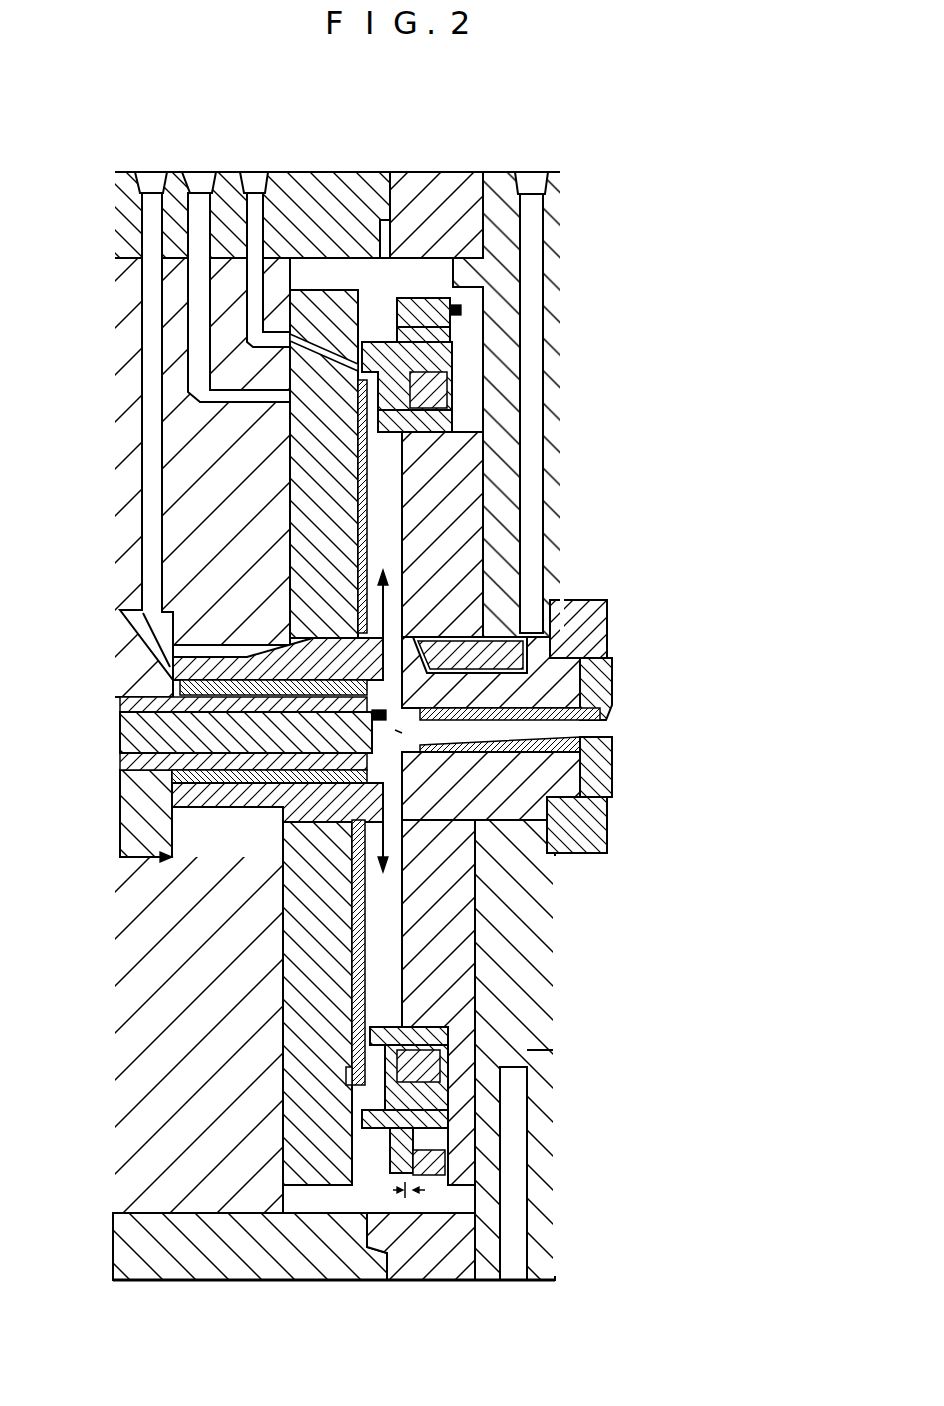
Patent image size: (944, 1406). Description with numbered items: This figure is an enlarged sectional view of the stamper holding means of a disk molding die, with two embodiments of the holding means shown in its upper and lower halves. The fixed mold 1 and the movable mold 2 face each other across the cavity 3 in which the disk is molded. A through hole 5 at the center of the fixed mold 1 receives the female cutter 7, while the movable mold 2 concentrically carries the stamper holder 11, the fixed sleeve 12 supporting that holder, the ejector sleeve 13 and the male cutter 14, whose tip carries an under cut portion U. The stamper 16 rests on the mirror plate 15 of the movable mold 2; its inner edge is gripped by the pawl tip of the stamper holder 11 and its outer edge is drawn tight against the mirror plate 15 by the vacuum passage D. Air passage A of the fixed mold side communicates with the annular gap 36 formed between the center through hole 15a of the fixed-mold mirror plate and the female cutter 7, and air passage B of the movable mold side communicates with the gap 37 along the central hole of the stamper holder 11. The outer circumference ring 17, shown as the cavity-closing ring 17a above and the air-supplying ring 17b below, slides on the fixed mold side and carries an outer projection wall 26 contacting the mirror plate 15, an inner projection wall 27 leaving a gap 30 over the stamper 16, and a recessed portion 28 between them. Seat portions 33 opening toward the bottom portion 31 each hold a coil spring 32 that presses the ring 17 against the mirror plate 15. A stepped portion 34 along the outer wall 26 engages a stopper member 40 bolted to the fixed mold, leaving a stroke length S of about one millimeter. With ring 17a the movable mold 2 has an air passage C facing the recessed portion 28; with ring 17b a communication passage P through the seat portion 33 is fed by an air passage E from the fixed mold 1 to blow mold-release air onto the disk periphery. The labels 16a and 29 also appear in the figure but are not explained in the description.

The fixed mold 1 is at (387, 1287).
The movable mold 2 is at (385, 1287).
The cavity 3 is at (481, 968).
The through hole 5 is at (602, 823).
The female cutter 7 is at (614, 628).
The stamper holder 11 is at (253, 800).
The fixed sleeve 12 is at (116, 879).
The ejector sleeve 13 is at (277, 829).
The male cutter 14 is at (460, 509).
The mirror plate 15 is at (283, 1003).
The center through hole 15a is at (539, 603).
The stamper 16 is at (335, 952).
The housing 16a is at (345, 769).
The outer circumference ring 17 is at (532, 710).
The annular outer-circumference ring 17a is at (532, 362).
The annular outer-circumference ring 17b is at (532, 1045).
The outer projection wall 26 is at (371, 240).
The inner projection wall 27 is at (209, 464).
The recessed portion 28 is at (516, 387).
The mating ring 29 is at (515, 443).
The gap 30 is at (224, 677).
The bottom portion 31 is at (495, 483).
The coil spring 32 is at (483, 221).
The seat portion 33 is at (564, 710).
The stepped portion 34 is at (516, 1151).
The annular gap 36 is at (541, 421).
The gap 37 is at (278, 623).
The stopper member 40 is at (458, 219).
The air passage A is at (567, 383).
The air passage B is at (146, 391).
The air passage C is at (267, 229).
The vacuum passage D is at (236, 255).
The air passage E is at (562, 1165).
The communication passage P is at (472, 1045).
The stroke length S is at (397, 1192).
The under cut portion U is at (411, 738).